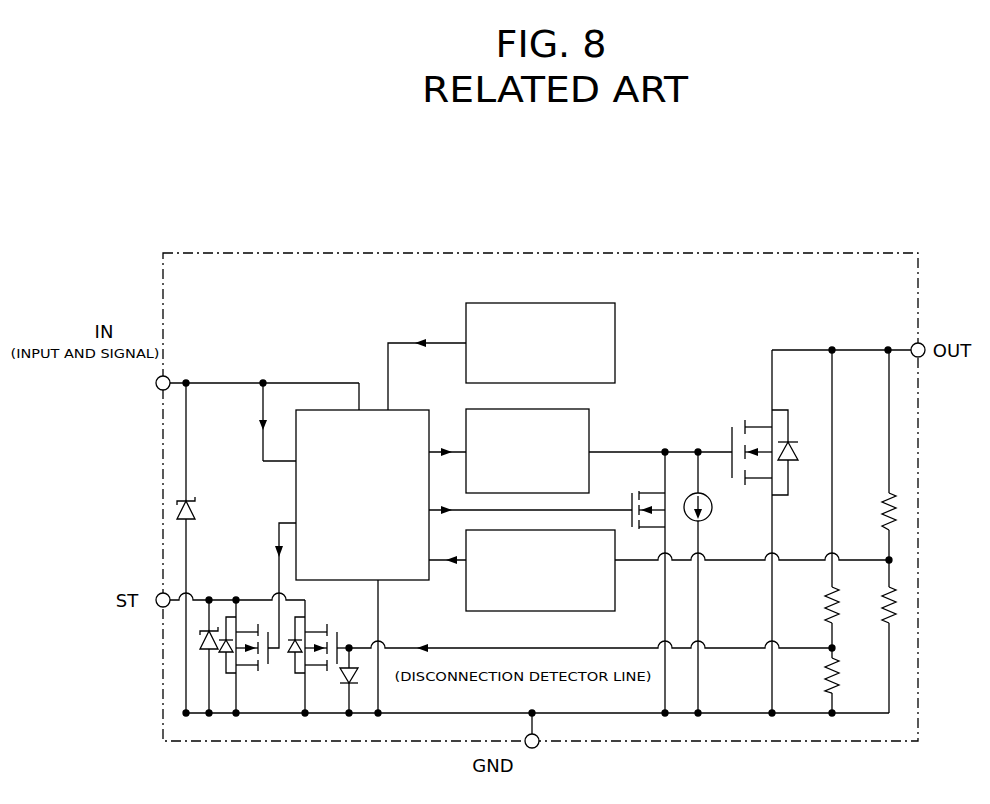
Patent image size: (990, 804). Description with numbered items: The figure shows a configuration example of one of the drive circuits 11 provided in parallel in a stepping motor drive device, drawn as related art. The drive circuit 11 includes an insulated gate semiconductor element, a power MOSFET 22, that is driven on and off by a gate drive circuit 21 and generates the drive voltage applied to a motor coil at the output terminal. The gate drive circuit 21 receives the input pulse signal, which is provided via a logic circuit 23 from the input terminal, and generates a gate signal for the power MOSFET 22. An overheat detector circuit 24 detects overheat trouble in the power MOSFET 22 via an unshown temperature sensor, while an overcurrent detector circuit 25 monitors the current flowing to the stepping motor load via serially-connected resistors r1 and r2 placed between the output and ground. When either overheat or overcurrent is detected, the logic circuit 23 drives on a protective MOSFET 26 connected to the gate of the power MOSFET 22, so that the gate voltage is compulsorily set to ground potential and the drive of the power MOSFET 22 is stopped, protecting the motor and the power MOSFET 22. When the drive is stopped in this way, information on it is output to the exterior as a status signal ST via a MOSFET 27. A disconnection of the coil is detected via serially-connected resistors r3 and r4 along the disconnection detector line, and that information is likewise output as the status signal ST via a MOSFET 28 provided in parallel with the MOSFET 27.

The drive circuit 11 is at (470, 268).
The gate drive circuit 21 is at (582, 424).
The power MOSFET 22 is at (762, 417).
The logic circuit 23 is at (328, 443).
The overheat detector circuit 24 is at (603, 343).
The overcurrent detector circuit 25 is at (466, 600).
The protective MOSFET 26 is at (643, 490).
The MOSFET 27 is at (230, 598).
The MOSFET 28 is at (321, 629).
The resistor r1 is at (873, 468).
The resistor r2 is at (873, 650).
The resistor r3 is at (817, 504).
The resistor r4 is at (817, 687).